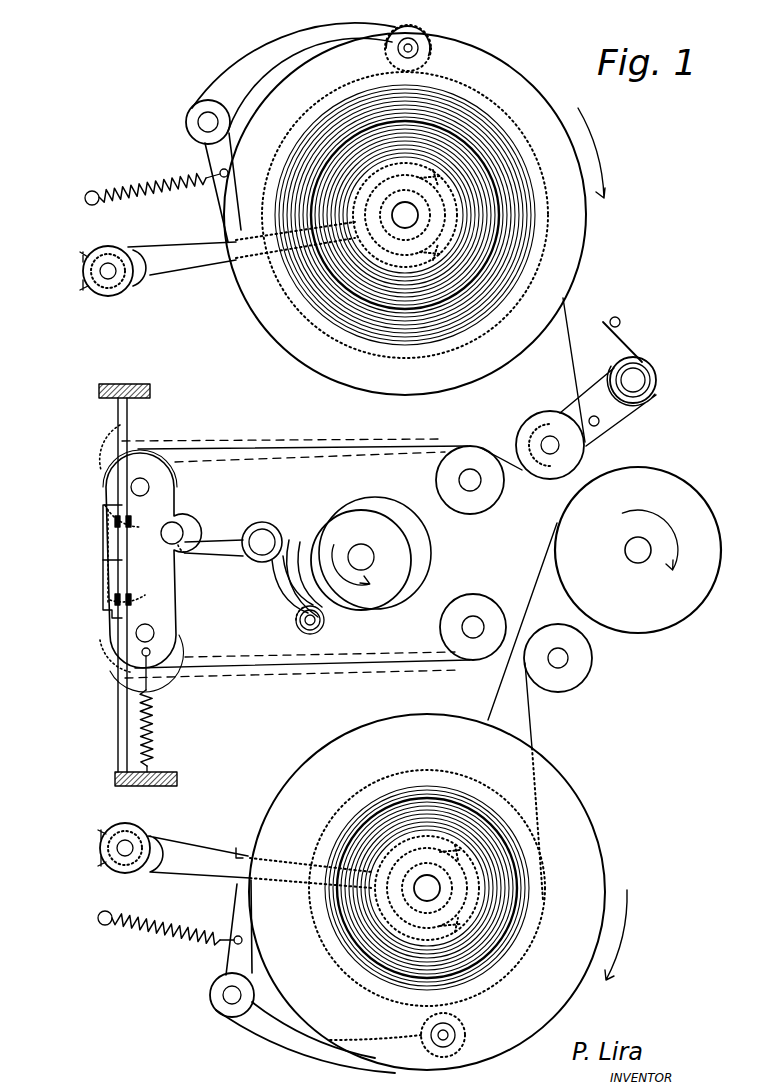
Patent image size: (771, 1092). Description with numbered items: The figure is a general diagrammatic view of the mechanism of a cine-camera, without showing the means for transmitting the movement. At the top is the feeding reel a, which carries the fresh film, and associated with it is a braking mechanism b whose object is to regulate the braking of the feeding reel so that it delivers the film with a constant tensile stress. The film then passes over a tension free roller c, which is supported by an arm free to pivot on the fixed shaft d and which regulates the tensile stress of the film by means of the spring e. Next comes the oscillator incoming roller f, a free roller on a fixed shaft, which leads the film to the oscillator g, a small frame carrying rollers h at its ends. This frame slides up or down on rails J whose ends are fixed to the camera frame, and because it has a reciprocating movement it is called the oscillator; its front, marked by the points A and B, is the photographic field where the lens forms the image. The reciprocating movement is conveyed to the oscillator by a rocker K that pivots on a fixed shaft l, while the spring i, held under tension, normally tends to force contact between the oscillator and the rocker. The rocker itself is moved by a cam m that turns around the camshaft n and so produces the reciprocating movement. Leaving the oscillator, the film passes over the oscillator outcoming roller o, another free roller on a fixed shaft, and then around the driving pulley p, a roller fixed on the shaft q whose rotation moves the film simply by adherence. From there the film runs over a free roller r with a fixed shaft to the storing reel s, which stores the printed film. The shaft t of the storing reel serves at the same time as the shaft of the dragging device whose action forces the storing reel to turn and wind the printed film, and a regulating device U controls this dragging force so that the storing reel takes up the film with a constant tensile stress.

The feeding reel a is at (414, 210).
The braking mechanism b is at (95, 245).
The tension free roller c is at (533, 388).
The fixed shaft d is at (640, 376).
The spring e is at (624, 339).
The oscillator incoming roller f is at (313, 476).
The oscillator g is at (151, 558).
The rollers h is at (146, 560).
The spring i is at (153, 710).
The rails J is at (126, 717).
The rocker K is at (265, 603).
The fixed shaft l is at (262, 542).
The cam m is at (351, 565).
The camshaft n is at (361, 560).
The oscillator outcoming roller o is at (315, 634).
The driving pulley p is at (604, 593).
The shaft q is at (636, 549).
The free roller r is at (558, 762).
The storing reel s is at (438, 892).
The shaft of the storing reel t is at (432, 888).
The front of the oscillator A is at (97, 529).
The front of the oscillator B is at (98, 593).
The dragging force regulating device U is at (105, 870).